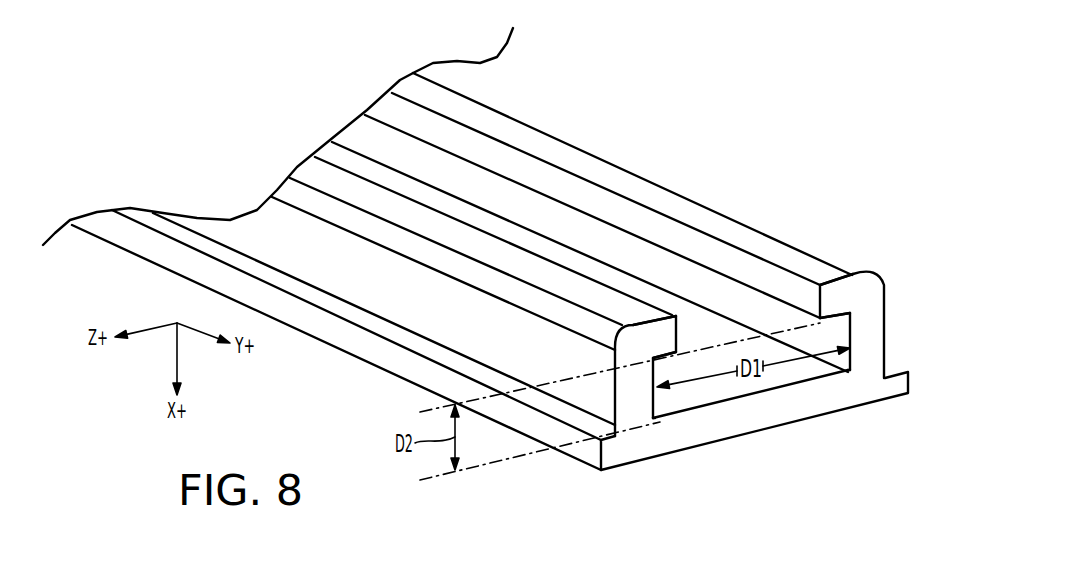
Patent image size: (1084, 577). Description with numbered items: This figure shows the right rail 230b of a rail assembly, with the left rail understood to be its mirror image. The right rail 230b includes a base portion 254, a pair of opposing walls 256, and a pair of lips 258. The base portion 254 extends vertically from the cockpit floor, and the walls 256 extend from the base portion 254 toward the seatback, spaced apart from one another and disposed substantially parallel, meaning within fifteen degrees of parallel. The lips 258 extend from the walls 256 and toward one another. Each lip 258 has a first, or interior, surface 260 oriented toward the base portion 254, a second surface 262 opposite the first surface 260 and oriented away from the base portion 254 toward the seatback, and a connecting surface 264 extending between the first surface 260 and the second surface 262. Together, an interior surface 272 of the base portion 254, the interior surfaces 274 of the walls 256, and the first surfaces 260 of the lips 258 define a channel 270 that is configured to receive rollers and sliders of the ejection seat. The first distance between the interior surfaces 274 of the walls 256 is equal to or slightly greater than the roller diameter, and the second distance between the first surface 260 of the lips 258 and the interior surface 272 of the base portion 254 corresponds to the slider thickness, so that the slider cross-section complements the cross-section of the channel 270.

The right rail 230b is at (243, 120).
The base portion 254 is at (787, 417).
The opposing walls 256 is at (873, 320).
The lips 258 is at (830, 302).
The first surface 260 is at (833, 318).
The second surface 262 is at (603, 178).
The connecting surface 264 is at (680, 240).
The channel 270 is at (730, 400).
The interior surface of base portion 272 is at (757, 353).
The interior surfaces of walls 274 is at (658, 407).